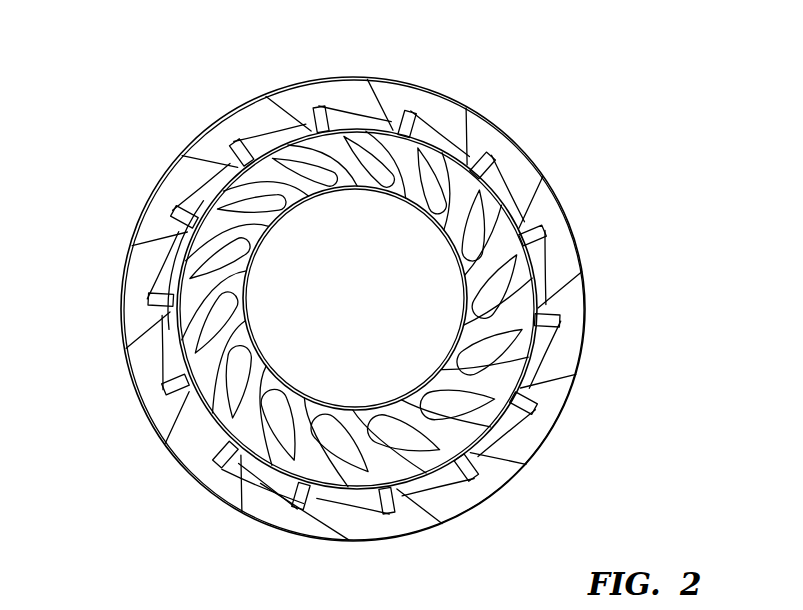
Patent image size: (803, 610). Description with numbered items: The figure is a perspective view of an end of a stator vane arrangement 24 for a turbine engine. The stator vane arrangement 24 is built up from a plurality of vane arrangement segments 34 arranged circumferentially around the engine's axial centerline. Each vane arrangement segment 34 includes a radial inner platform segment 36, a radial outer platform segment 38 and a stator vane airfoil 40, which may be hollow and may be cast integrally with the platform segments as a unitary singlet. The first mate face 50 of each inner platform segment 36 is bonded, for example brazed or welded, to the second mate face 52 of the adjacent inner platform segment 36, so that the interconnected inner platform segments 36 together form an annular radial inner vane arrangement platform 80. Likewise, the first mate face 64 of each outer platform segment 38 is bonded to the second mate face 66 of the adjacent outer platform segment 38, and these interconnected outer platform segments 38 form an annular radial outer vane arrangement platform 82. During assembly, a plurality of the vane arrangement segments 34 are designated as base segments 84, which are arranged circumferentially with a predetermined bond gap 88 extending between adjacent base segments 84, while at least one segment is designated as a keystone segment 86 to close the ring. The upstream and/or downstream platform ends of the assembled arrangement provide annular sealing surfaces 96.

The stator vane arrangement 24 is at (586, 108).
The vane arrangement segments 34 is at (127, 384).
The radial inner platform segment 36 is at (253, 343).
The radial outer platform segment 38 is at (203, 487).
The stator vane airfoil 40 is at (233, 467).
The first mate face 50 is at (358, 413).
The second mate face 52 is at (297, 397).
The first mate face 64 is at (343, 543).
The second mate face 66 is at (332, 536).
The radial inner vane arrangement platform 80 is at (462, 270).
The radial outer vane arrangement platform 82 is at (578, 230).
The base segments 84 is at (306, 80).
The keystone segment 86 is at (224, 118).
The bond gap 88 is at (308, 118).
The annular sealing surfaces 96 is at (148, 300).